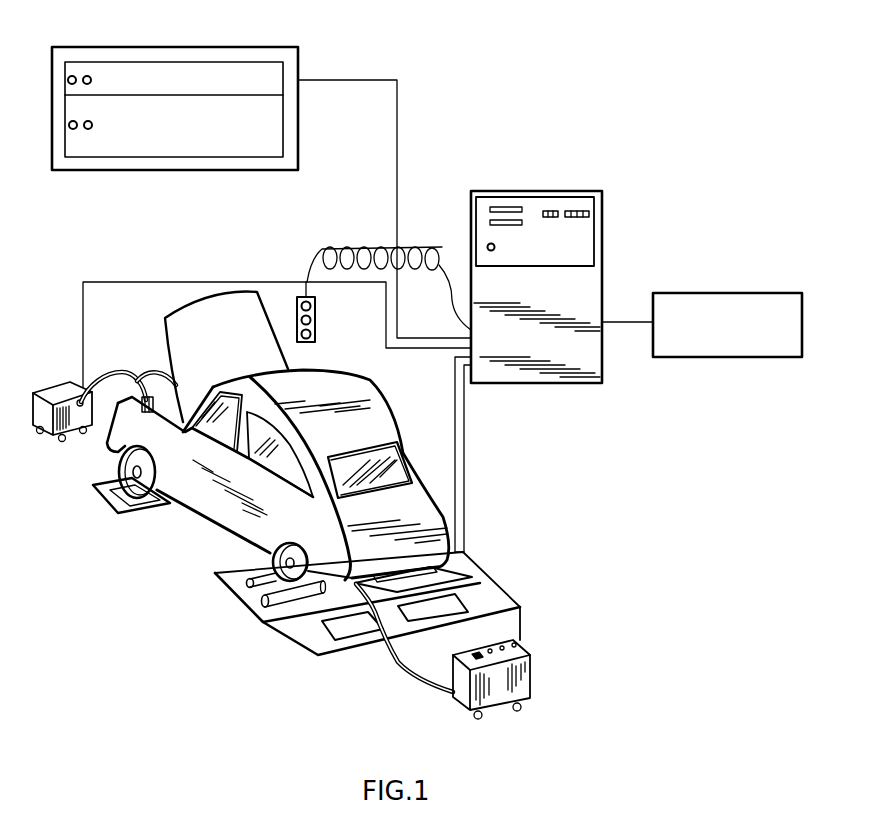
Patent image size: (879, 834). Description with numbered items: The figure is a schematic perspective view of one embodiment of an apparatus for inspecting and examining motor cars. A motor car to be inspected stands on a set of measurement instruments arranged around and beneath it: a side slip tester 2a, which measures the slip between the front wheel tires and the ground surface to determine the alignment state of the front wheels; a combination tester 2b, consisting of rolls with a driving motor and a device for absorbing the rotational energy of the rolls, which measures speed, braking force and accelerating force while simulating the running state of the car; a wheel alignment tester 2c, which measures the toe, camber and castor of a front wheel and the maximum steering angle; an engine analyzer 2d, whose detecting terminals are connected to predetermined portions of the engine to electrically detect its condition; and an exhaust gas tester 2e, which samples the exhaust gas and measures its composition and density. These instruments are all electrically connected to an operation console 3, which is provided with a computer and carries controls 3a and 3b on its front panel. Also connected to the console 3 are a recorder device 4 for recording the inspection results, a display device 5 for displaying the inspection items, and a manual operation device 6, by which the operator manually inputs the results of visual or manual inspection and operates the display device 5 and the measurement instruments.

The side slip tester 2a is at (430, 610).
The combination tester 2b is at (265, 602).
The wheel alignment tester 2c is at (107, 502).
The engine analyzer 2d is at (52, 390).
The exhaust gas tester 2e is at (522, 688).
The operation console 3 is at (495, 189).
The switches 3a is at (575, 208).
The switches 3b is at (547, 208).
The recorder device 4 is at (723, 297).
The display device 5 is at (242, 46).
The manual operation device 6 is at (315, 325).